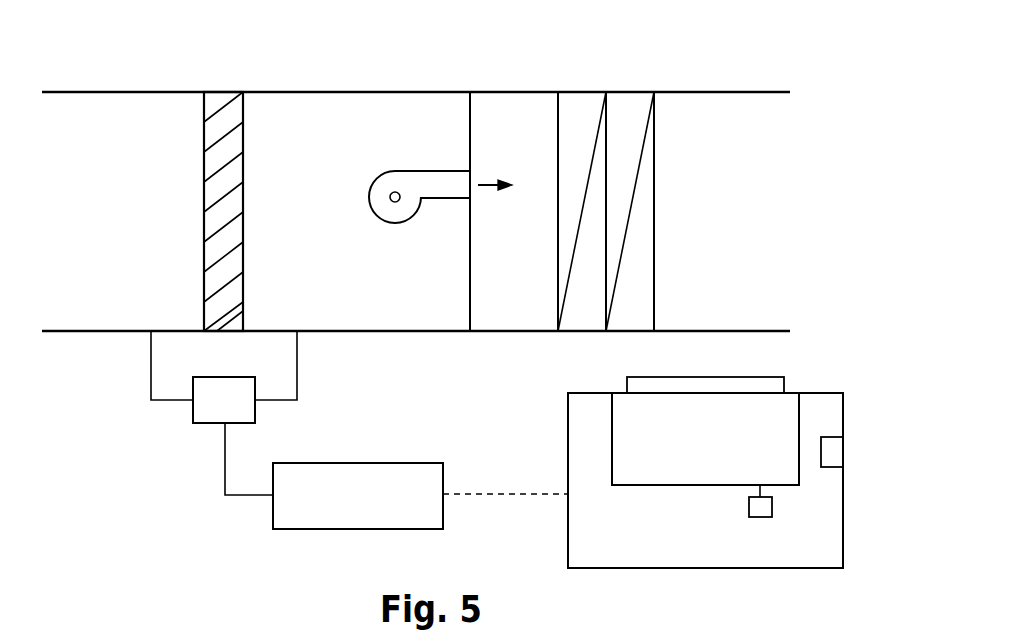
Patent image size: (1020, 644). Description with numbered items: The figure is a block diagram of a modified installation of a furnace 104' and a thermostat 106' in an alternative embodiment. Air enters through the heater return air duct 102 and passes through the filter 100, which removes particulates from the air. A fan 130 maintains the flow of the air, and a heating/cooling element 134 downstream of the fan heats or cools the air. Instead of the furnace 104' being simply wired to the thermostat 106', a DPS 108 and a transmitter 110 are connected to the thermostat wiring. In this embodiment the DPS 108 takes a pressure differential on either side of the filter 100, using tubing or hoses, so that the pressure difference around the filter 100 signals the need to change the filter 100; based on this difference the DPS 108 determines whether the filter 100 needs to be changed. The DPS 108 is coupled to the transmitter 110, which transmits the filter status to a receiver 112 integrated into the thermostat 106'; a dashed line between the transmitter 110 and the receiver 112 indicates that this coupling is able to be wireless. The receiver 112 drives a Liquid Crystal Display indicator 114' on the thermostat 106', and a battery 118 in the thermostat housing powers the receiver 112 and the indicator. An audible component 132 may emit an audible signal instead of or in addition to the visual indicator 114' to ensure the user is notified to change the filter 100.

The filter 100 is at (219, 93).
The heater return air duct 102 is at (98, 118).
The furnace 104' is at (403, 189).
The thermostat 106' is at (747, 480).
The DPS 108 is at (193, 414).
The transmitter 110 is at (273, 517).
The receiver 112 is at (800, 420).
The Liquid Crystal Display (LCD) indicator 114' is at (705, 368).
The battery 118 is at (772, 510).
The fan 130 is at (368, 199).
The audible component 132 is at (845, 455).
The heating/cooling element 134 is at (575, 115).